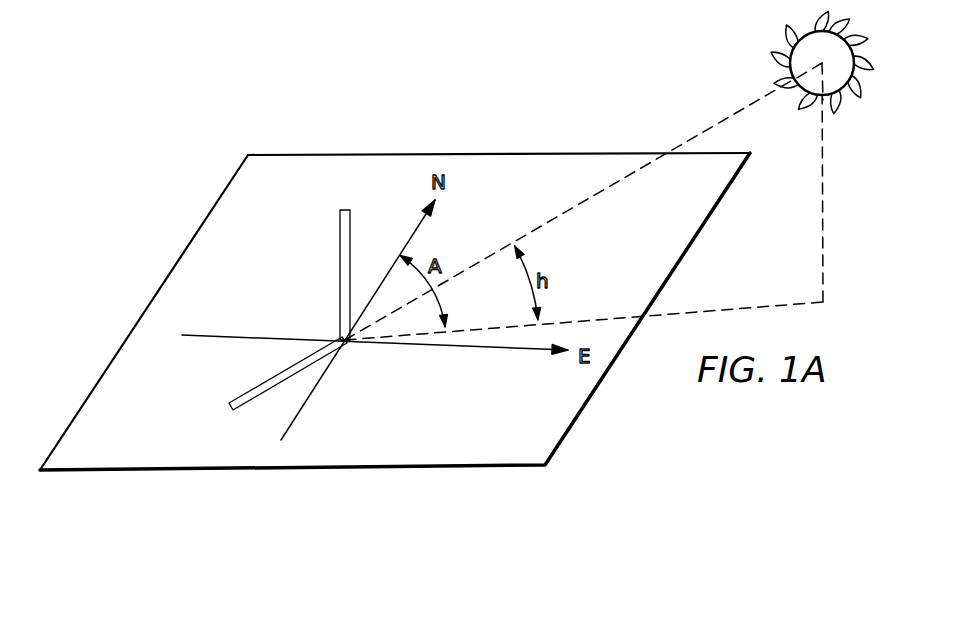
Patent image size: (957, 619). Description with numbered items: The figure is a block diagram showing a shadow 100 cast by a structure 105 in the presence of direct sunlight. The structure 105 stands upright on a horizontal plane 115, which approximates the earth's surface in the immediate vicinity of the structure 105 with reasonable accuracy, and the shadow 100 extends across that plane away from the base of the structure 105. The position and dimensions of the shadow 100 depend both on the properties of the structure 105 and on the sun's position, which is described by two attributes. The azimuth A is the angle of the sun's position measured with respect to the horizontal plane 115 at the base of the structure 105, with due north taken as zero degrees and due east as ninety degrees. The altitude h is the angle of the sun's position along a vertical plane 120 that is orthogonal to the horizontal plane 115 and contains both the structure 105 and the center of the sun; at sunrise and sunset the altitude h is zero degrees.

The shadow 100 is at (248, 393).
The structure 105 is at (340, 276).
The horizontal plane 115 is at (500, 153).
The vertical plane 120 is at (825, 235).